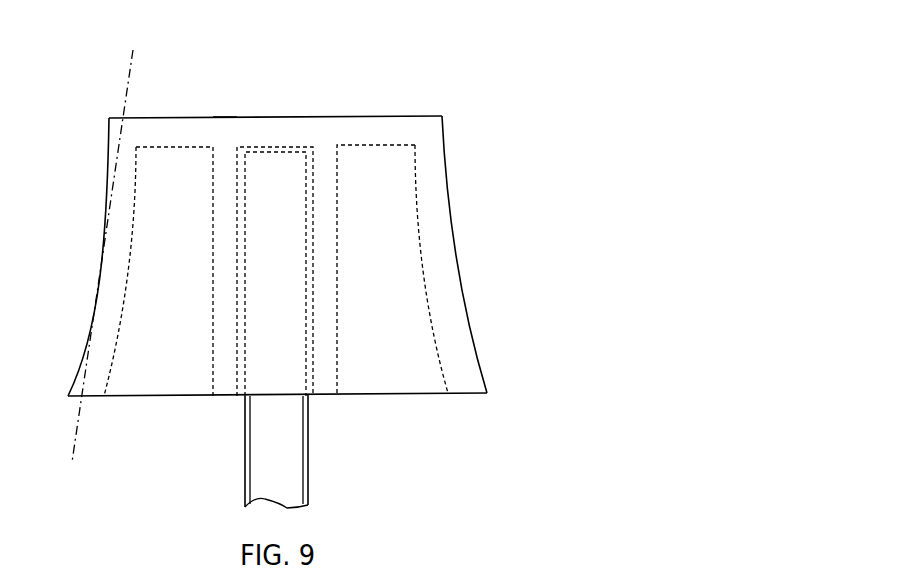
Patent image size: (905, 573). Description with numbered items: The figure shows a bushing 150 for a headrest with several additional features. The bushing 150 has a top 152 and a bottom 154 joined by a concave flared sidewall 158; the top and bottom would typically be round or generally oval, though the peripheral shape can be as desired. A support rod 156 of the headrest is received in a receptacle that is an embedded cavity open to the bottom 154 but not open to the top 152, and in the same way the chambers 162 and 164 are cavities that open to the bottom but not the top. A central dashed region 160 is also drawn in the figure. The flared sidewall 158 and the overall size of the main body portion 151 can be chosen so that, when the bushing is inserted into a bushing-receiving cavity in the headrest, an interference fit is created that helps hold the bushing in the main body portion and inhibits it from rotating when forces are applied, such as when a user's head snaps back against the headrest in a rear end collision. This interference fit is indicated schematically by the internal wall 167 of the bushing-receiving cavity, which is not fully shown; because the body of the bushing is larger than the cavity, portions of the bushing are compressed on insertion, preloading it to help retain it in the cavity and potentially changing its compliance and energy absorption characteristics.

The bushing 150 is at (463, 57).
The main body portion 151 is at (231, 127).
The top 152 is at (192, 117).
The bottom 154 is at (472, 395).
The support rod 156 is at (300, 472).
The concave flared sidewall 158 is at (445, 210).
The central channel 160 is at (315, 145).
The chamber 162 is at (385, 377).
The chamber 164 is at (162, 383).
The internal wall 167 is at (128, 91).